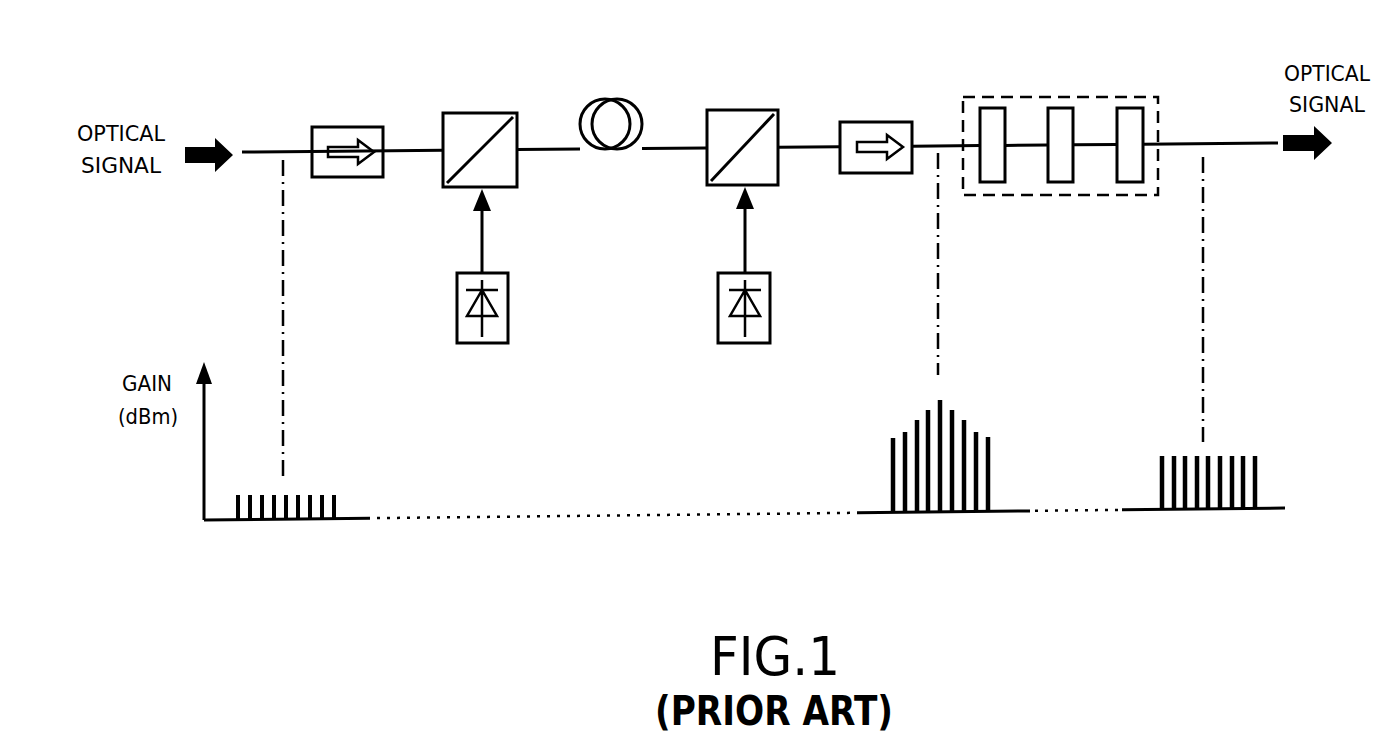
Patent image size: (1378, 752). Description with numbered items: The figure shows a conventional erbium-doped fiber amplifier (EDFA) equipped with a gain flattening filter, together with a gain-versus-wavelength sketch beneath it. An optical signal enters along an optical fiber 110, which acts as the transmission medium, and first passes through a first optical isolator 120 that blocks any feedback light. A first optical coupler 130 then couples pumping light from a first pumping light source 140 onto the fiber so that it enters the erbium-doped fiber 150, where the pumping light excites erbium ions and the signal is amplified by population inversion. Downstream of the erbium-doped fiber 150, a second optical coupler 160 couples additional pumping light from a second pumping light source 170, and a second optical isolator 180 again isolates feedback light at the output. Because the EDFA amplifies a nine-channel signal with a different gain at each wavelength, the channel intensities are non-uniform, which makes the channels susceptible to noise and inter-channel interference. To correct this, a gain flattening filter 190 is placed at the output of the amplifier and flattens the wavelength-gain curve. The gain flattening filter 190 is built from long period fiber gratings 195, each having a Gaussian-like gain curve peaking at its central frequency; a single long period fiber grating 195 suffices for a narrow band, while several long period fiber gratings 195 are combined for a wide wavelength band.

The optical fiber 110 is at (265, 148).
The first optical isolator 120 is at (341, 126).
The first optical coupler 130 is at (476, 112).
The first pumping light source 140 is at (508, 316).
The erbium-doped fiber 150 is at (611, 99).
The second optical coupler 160 is at (743, 110).
The second pumping light source 170 is at (770, 310).
The second optical isolator 180 is at (880, 122).
The gain flattening filter 190 is at (1045, 97).
The long period fiber grating 195 is at (988, 107).